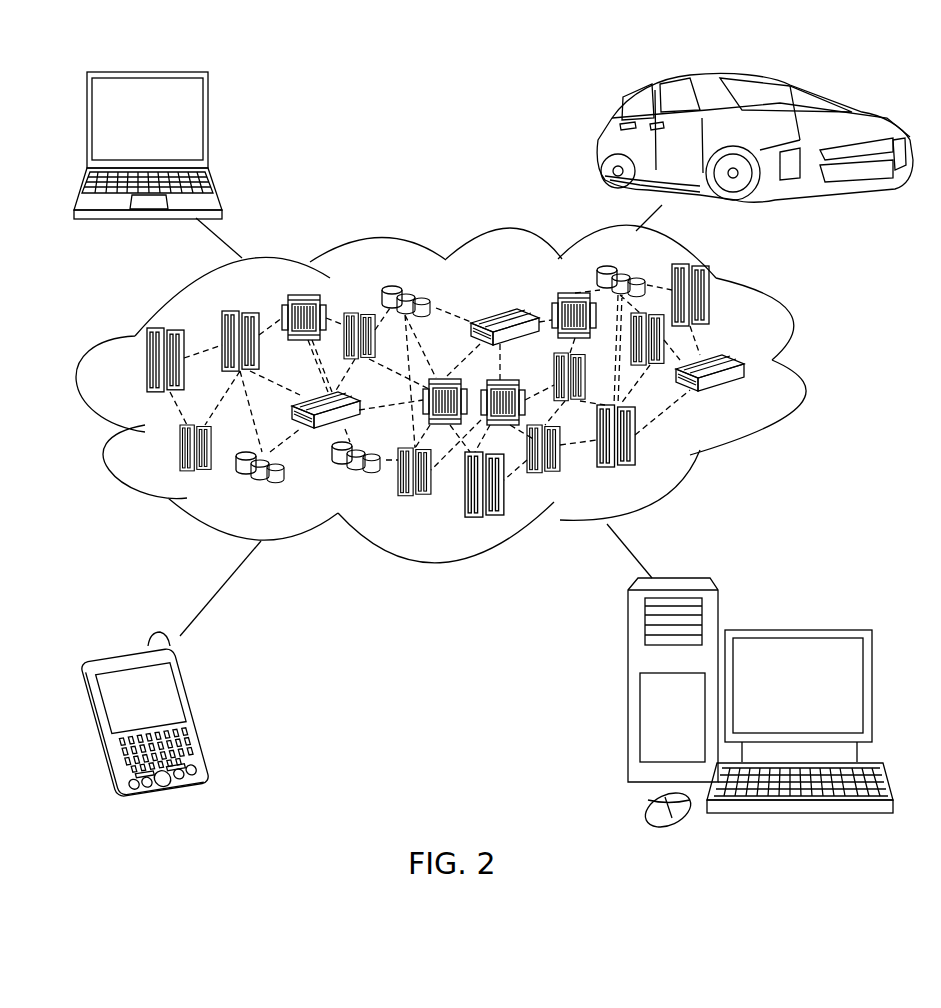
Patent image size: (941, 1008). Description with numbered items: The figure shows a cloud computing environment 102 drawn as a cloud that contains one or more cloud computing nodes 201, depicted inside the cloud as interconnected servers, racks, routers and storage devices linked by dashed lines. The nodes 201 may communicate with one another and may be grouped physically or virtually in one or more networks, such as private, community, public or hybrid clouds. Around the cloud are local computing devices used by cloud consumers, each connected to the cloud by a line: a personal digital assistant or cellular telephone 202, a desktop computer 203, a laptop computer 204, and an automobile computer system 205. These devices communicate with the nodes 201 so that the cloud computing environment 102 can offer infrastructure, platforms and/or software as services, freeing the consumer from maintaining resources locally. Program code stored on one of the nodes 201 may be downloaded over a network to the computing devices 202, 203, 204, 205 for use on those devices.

The cloud computing environment 102 is at (798, 372).
The cloud computing nodes 201 is at (752, 398).
The personal digital assistant or cellular telephone 202 is at (198, 710).
The desktop computer 203 is at (795, 630).
The laptop computer 204 is at (208, 128).
The automobile computer system 205 is at (598, 140).